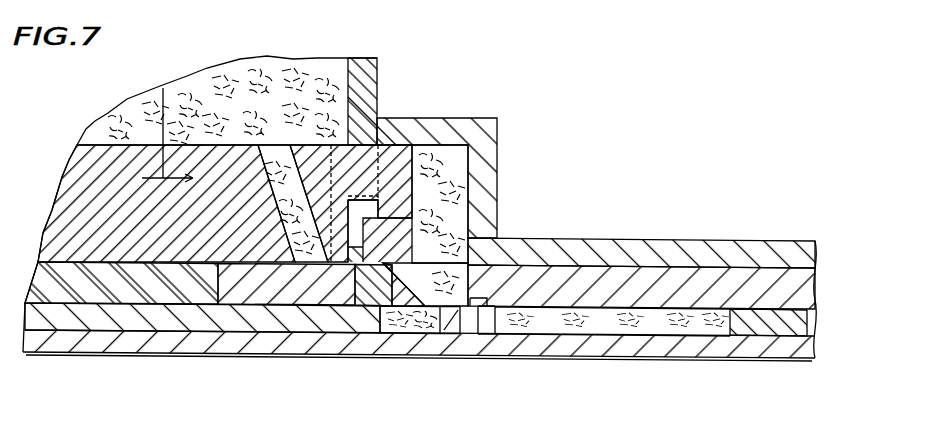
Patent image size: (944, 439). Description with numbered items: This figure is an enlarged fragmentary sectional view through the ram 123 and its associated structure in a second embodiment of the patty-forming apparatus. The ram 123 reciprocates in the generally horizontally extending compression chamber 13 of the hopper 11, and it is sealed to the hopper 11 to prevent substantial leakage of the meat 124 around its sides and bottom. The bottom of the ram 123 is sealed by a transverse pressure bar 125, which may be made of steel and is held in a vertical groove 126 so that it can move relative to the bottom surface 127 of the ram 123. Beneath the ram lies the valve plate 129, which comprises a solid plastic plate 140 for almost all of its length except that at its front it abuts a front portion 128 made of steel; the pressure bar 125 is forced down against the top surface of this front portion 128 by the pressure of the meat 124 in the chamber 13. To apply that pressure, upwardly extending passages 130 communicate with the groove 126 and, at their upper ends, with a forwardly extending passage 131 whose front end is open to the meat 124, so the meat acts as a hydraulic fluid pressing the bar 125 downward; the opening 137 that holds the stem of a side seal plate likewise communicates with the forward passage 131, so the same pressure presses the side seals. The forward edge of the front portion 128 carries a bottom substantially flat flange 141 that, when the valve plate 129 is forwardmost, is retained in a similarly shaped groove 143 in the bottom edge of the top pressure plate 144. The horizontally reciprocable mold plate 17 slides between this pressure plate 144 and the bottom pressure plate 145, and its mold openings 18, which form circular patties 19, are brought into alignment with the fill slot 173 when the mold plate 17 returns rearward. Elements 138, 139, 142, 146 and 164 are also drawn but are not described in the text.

The hopper 11 is at (380, 32).
The compression chamber 13 is at (497, 170).
The mold plate 17 is at (780, 330).
The mold openings 18 is at (727, 318).
The patties 19 is at (547, 317).
The ram 123 is at (205, 163).
The meat 124 is at (448, 157).
The pressure bar 125 is at (375, 298).
The groove 126 is at (270, 297).
The bottom surface 127 is at (372, 312).
The front portion 128 is at (253, 297).
The valve plate 129 is at (177, 250).
The upwardly extending passages 130 is at (273, 113).
The forwardly extending passage 131 is at (397, 145).
The opening 137 is at (374, 206).
The wall strip 138 is at (348, 97).
The upper mass 139 is at (238, 72).
The solid plastic plate 140 is at (120, 293).
The bottom substantially flat flange 141 is at (438, 310).
The fill region 142 is at (410, 290).
The groove 143 is at (477, 310).
The pressure plate 144 is at (582, 285).
The bottom pressure plate 145 is at (597, 347).
The lower band 146 is at (687, 303).
The flow arrow 164 is at (163, 88).
The fill slot 173 is at (463, 300).